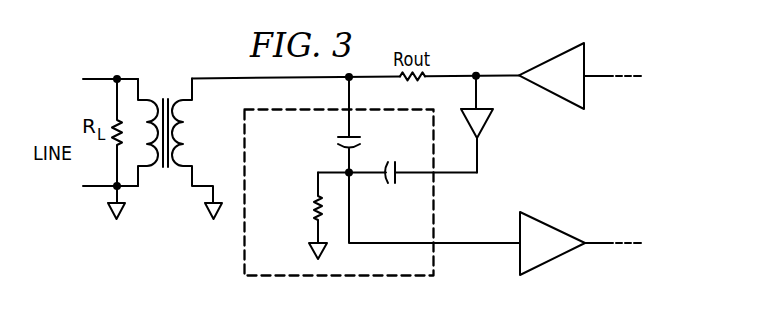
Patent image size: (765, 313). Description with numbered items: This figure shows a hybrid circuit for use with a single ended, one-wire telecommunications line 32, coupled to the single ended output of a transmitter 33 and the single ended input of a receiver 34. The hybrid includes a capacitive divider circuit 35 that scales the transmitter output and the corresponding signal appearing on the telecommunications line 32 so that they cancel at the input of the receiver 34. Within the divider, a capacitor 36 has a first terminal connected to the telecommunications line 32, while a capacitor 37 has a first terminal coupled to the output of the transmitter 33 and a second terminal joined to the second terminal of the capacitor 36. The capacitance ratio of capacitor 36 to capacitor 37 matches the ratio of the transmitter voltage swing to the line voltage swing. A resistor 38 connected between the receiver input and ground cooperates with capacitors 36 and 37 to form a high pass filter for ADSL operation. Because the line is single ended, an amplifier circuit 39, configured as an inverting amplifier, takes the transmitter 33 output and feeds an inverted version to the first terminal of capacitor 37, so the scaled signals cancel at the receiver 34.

The telecommunications line 32 is at (213, 78).
The transmitter 33 is at (550, 61).
The receiver 34 is at (553, 259).
The capacitive divider circuit 35 is at (238, 232).
The capacitor 36 is at (338, 146).
The capacitor 37 is at (390, 185).
The resistor 38 is at (312, 206).
The amplifier circuit 39 is at (484, 121).